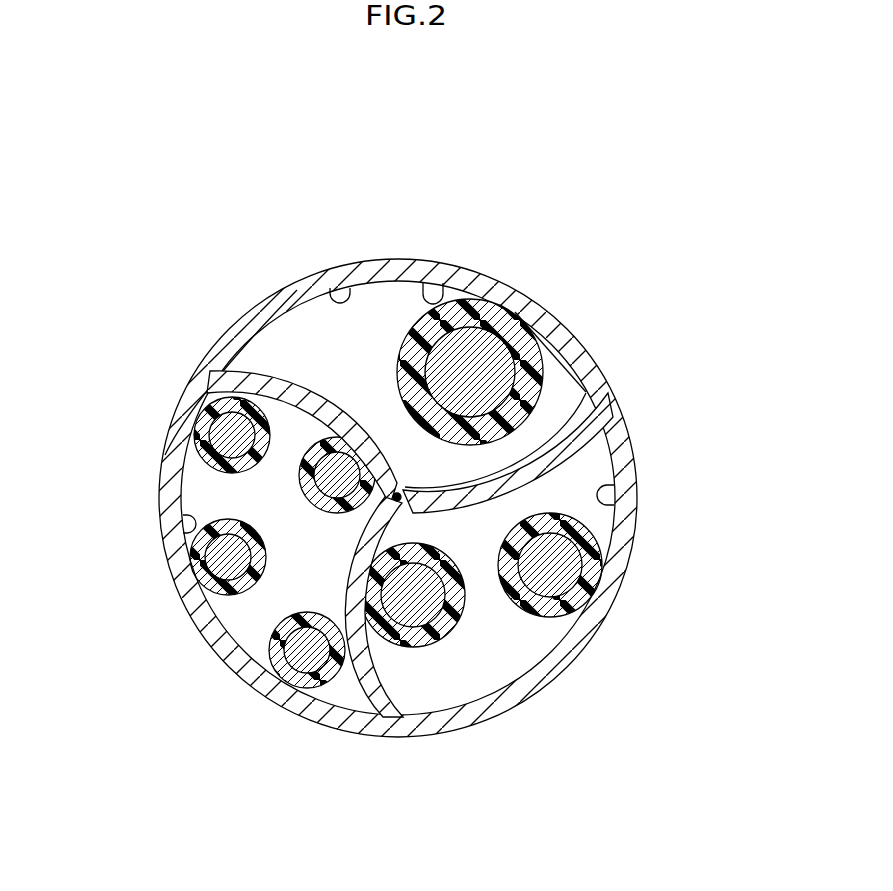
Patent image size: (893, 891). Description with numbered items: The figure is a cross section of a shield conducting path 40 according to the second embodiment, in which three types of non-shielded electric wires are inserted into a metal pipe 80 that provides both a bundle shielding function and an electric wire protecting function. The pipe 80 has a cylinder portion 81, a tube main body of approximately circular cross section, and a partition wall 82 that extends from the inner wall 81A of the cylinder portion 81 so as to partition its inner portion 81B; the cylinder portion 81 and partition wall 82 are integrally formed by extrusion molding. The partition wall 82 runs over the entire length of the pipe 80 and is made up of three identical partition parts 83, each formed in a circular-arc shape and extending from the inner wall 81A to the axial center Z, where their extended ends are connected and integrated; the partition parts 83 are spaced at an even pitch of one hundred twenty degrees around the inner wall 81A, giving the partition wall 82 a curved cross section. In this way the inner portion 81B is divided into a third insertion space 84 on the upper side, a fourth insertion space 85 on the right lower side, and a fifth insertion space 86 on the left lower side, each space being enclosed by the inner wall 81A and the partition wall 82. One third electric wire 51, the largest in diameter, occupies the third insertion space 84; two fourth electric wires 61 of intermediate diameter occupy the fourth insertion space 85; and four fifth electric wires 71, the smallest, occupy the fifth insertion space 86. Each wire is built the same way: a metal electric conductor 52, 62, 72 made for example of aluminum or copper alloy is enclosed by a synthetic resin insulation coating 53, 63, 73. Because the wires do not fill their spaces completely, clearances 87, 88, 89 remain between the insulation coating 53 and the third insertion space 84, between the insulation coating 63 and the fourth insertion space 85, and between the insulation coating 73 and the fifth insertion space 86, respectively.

The shield conducting path 40 is at (441, 159).
The third electric wire 51 is at (495, 315).
The electric conductor 52 is at (455, 325).
The insulation coating 53 is at (484, 300).
The fourth electric wire 61 is at (536, 653).
The electric conductor 62 is at (566, 620).
The insulation coating 63 is at (588, 600).
The fifth electric wire 71 is at (220, 573).
The electric conductor 72 is at (193, 452).
The insulation coating 73 is at (292, 505).
The pipe 80 is at (399, 525).
The cylinder portion 81 is at (592, 332).
The inner wall 81A is at (427, 283).
The inner portion 81B is at (268, 375).
The partition wall 82 is at (411, 577).
The partition part 83 is at (600, 430).
The third insertion space 84 is at (331, 287).
The fourth insertion space 85 is at (530, 640).
The fifth insertion space 86 is at (220, 573).
The clearance 87 is at (385, 304).
The clearance 88 is at (418, 705).
The clearance 89 is at (325, 697).
The axial center Z is at (401, 501).